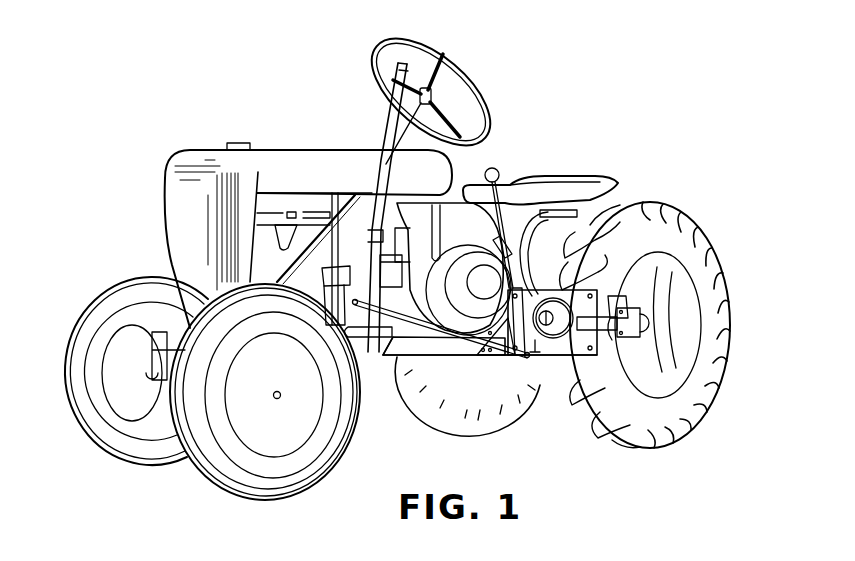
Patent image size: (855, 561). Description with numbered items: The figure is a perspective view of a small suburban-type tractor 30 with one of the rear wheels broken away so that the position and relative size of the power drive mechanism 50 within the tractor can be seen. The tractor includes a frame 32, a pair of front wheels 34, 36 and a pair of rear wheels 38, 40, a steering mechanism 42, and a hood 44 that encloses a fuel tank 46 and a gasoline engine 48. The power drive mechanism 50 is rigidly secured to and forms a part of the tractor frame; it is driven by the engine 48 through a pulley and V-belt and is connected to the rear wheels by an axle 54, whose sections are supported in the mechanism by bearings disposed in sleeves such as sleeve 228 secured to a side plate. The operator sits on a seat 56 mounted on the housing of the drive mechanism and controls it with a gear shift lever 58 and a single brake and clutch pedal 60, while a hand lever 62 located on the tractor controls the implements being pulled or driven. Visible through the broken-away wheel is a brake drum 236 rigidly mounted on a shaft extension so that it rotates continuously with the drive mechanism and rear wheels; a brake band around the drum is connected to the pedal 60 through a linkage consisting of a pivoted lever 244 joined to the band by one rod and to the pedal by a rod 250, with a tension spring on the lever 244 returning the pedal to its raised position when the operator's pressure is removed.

The tractor 30 is at (163, 154).
The frame 32 is at (402, 357).
The front wheel 34 is at (97, 438).
The front wheel 36 is at (230, 478).
The rear wheel 38 is at (477, 424).
The rear wheel 40 is at (732, 347).
The steering mechanism 42 is at (434, 97).
The hood 44 is at (314, 165).
The fuel tank 46 is at (294, 201).
The gasoline engine 48 is at (474, 244).
The power drive mechanism 50 is at (582, 348).
The axle 54 is at (614, 303).
The seat 56 is at (608, 185).
The gear shift lever 58 is at (505, 175).
The brake and clutch pedal 60 is at (326, 294).
The hand lever 62 is at (390, 116).
The sleeve 228 is at (625, 340).
The brake drum 236 is at (565, 306).
The pivoted lever 244 is at (516, 338).
The rod 250 is at (450, 350).